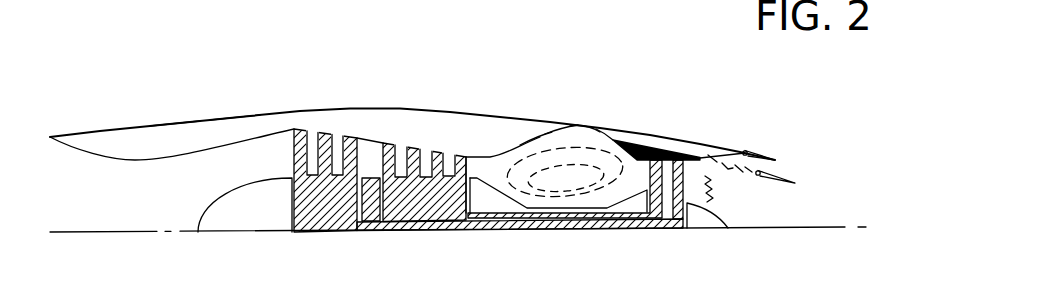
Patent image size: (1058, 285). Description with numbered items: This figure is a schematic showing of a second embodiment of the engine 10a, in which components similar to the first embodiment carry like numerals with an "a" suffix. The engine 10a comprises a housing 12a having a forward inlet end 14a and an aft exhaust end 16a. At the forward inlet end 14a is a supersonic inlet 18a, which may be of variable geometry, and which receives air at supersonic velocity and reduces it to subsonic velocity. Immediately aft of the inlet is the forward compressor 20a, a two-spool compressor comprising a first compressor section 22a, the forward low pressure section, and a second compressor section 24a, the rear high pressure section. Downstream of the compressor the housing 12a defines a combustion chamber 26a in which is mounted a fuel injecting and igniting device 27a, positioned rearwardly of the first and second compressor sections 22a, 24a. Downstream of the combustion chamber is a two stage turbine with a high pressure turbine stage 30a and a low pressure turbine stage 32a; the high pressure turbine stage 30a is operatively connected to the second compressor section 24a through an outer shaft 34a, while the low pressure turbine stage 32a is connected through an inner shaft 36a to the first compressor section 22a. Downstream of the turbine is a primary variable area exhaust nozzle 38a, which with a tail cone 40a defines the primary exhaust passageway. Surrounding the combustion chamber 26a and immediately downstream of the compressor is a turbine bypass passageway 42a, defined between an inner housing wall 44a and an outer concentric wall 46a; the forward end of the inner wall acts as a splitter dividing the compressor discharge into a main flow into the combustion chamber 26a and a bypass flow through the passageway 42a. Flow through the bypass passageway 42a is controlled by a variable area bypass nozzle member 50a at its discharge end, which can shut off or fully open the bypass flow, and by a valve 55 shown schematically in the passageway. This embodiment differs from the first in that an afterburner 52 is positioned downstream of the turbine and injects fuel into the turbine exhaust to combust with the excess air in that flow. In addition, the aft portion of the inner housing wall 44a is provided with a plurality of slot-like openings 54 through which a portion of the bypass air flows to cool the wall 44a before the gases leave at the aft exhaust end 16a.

The engine 10a is at (273, 61).
The housing 12a is at (237, 98).
The forward inlet end 14a is at (173, 111).
The supersonic inlet 18a is at (82, 183).
The forward compressor 20a is at (368, 98).
The first compressor section 22a is at (358, 100).
The second compressor section 24a is at (472, 100).
The fuel injecting and igniting device 27a is at (517, 182).
The turbine bypass passageway 42a is at (528, 141).
The outer concentric wall 46a is at (548, 135).
The inner housing wall 44a is at (578, 124).
The valve 55 is at (602, 137).
The high pressure turbine stage 30a is at (657, 155).
The low pressure turbine stage 32a is at (682, 172).
The outer shaft 34a is at (506, 219).
The inner shaft 36a is at (477, 229).
The combustion chamber 26a is at (580, 183).
The tail cone 40a is at (700, 223).
The afterburner 52 is at (711, 202).
The aft exhaust end 16a is at (733, 207).
The slot-like openings 54 is at (734, 160).
The variable area bypass nozzle member 50a is at (762, 150).
The primary variable area exhaust nozzle 38a is at (783, 178).